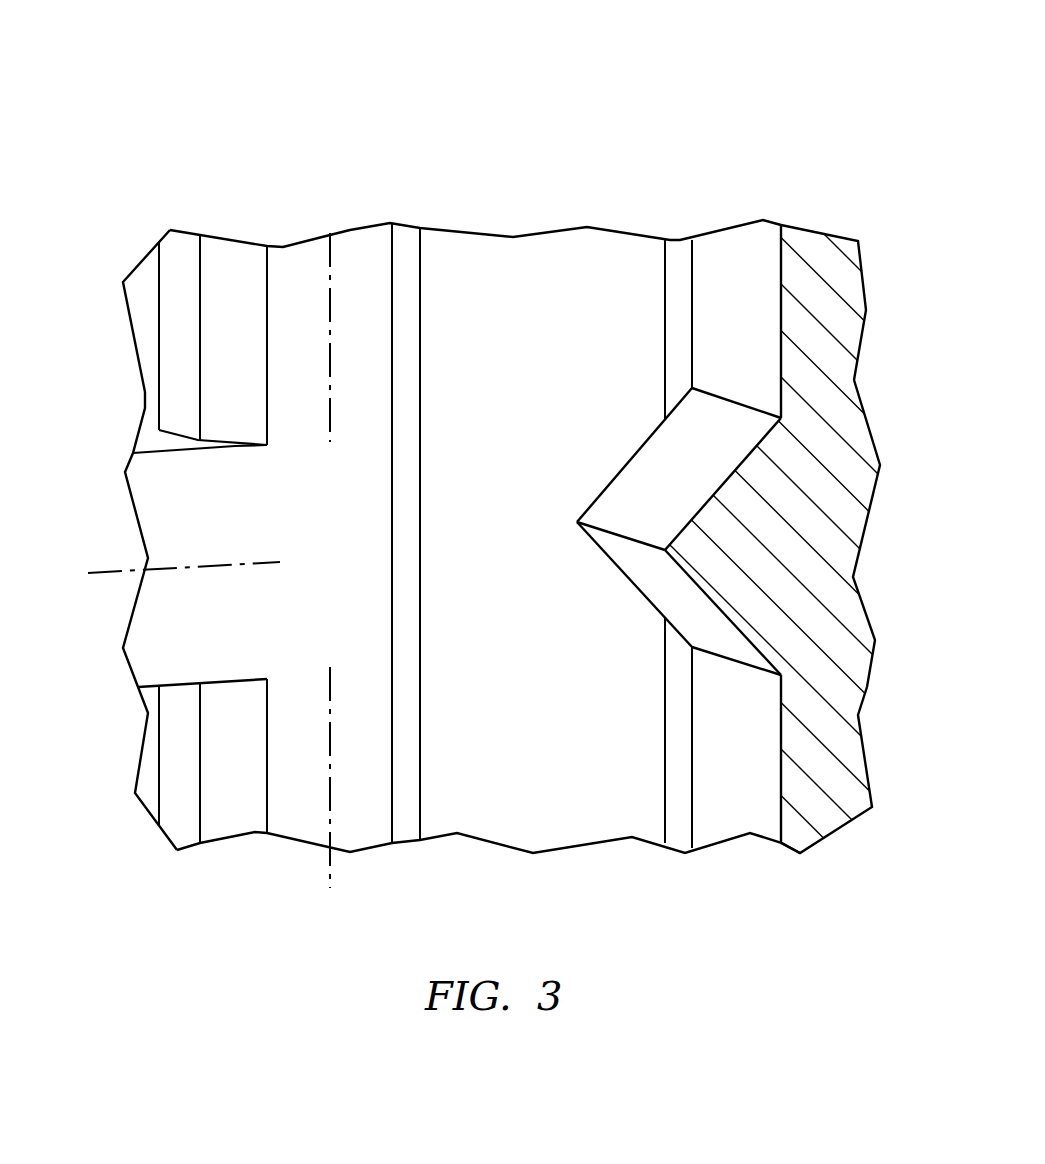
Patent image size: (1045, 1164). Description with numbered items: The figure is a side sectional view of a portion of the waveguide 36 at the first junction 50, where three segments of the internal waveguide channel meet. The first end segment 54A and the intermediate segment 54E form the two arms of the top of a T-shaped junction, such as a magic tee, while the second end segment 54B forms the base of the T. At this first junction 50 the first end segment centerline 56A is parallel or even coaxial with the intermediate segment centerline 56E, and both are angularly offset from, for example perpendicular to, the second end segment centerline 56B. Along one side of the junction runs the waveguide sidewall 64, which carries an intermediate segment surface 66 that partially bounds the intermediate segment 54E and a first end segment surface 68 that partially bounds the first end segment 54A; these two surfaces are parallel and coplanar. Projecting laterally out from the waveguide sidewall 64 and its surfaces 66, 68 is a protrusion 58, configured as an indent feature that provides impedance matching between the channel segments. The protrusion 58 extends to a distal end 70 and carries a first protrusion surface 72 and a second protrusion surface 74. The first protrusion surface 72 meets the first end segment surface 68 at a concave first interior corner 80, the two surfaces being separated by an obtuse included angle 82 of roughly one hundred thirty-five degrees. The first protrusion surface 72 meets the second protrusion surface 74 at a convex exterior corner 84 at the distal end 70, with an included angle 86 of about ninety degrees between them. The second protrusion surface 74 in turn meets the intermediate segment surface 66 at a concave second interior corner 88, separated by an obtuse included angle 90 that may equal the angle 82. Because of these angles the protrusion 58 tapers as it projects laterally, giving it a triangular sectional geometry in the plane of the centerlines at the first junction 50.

The waveguide 36 is at (778, 85).
The first junction 50 is at (795, 182).
The first end segment 54A is at (557, 831).
The second end segment 54B is at (145, 392).
The intermediate segment 54E is at (584, 247).
The first end segment centerline 56A is at (330, 870).
The second end segment centerline 56B is at (262, 565).
The intermediate segment centerline 56E is at (328, 270).
The protrusion 58 is at (598, 585).
The waveguide sidewall 64 is at (860, 298).
The intermediate segment surface 66 is at (728, 250).
The first end segment surface 68 is at (723, 825).
The distal end 70 is at (640, 531).
The first protrusion surface 72 is at (655, 592).
The second protrusion surface 74 is at (643, 470).
The first interior corner 80 is at (781, 675).
The included angle 82 is at (780, 735).
The exterior corner 84 is at (600, 522).
The included angle 86 is at (713, 501).
The second interior corner 88 is at (781, 418).
The included angle 90 is at (738, 461).